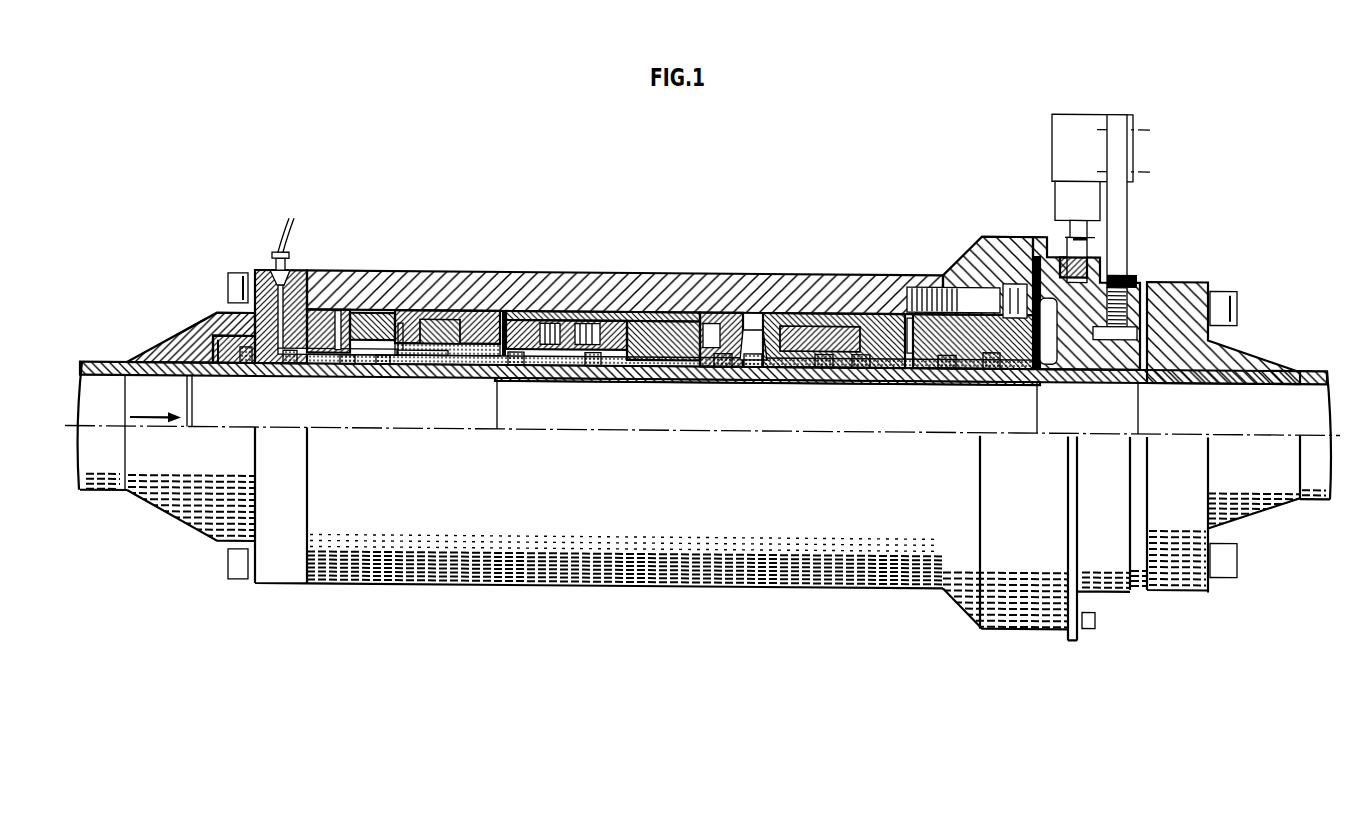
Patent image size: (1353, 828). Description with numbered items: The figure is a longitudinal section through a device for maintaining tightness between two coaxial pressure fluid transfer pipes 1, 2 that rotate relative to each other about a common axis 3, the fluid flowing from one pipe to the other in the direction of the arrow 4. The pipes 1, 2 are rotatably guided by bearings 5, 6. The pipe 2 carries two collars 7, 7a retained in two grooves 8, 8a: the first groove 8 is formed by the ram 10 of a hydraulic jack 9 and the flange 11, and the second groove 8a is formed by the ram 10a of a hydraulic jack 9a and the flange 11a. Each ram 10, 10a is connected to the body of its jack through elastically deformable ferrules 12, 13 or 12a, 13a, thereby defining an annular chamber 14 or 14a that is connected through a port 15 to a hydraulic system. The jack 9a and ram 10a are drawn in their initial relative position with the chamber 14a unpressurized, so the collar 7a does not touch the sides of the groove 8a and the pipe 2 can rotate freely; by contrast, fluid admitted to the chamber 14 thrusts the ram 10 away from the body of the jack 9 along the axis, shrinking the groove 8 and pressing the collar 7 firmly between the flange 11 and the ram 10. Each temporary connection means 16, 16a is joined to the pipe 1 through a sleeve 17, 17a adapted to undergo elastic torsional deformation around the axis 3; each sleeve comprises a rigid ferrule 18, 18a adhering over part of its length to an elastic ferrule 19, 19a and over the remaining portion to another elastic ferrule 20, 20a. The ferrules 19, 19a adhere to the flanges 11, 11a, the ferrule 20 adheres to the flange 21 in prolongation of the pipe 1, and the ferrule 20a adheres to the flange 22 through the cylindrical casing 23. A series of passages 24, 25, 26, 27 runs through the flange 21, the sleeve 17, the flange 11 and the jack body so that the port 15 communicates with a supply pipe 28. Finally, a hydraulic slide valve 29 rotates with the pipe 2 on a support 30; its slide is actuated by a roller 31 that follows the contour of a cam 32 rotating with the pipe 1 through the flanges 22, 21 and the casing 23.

The pipe 1 is at (84, 360).
The pipe 2 is at (892, 363).
The axis 3 is at (680, 365).
The arrow 4 is at (155, 404).
The bearing 5 is at (180, 329).
The bearing 6 is at (1020, 247).
The collar 7 is at (498, 326).
The collar 7a is at (750, 321).
The groove 8 is at (492, 321).
The groove 8a is at (743, 324).
The hydraulic jack 9 is at (603, 325).
The hydraulic jack 9a is at (772, 321).
The ram 10 is at (532, 313).
The ram 10a is at (700, 314).
The flange 11 is at (343, 315).
The flange 11a is at (883, 333).
The ferrule 12 is at (513, 366).
The ferrule 12a is at (753, 364).
The ferrule 13 is at (593, 365).
The ferrule 13a is at (637, 365).
The annular chamber 14 is at (562, 366).
The annular chamber 14a is at (723, 364).
The port 15 is at (560, 313).
The temporary connection means 16 is at (430, 312).
The temporary connection means 16a is at (645, 307).
The sleeve 17 is at (287, 368).
The sleeve 17a is at (860, 363).
The rigid ferrule 18 is at (240, 368).
The rigid ferrule 18a is at (945, 363).
The ferrule 19 is at (343, 367).
The ferrule 19a is at (823, 364).
The ferrule 20 is at (212, 368).
The ferrule 20a is at (992, 362).
The flange 21 is at (198, 320).
The flange 22 is at (960, 249).
The cylindrical casing 23 is at (833, 283).
The passage 24 is at (315, 283).
The passage 25 is at (380, 367).
The passage 26 is at (368, 297).
The passage 27 is at (410, 309).
The pipe 28 is at (270, 260).
The hydraulic slide valve 29 is at (1077, 164).
The support 30 is at (1122, 138).
The roller 31 is at (1070, 225).
The cam 32 is at (1087, 258).